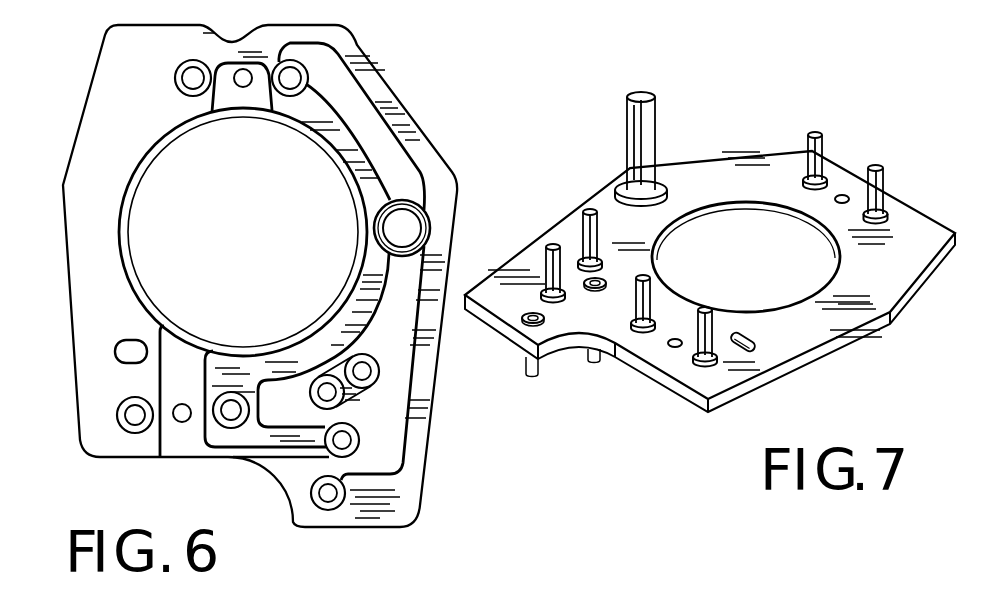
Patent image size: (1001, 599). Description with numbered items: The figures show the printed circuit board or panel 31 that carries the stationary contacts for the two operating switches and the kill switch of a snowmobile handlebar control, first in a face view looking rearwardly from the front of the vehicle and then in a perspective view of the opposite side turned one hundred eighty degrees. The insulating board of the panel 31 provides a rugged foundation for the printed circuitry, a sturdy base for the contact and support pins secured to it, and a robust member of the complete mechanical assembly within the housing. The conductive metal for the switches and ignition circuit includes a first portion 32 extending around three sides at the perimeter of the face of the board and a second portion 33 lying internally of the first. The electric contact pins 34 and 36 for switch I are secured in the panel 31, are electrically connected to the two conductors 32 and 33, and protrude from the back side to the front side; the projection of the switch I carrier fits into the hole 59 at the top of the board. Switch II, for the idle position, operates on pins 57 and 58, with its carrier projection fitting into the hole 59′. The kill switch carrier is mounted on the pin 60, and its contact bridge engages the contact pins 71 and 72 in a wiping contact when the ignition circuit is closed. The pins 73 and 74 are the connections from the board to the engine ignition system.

In FIG. 6, the printed circuit board 31 is at (402, 92).
In FIG. 6, the first conductive portion 32 is at (106, 113).
In FIG. 6, the second conductive portion 33 is at (352, 153).
In FIG. 6, the contact pin 34 is at (190, 77).
In FIG. 7, the contact pin 34 is at (882, 192).
In FIG. 6, the contact pin 36 is at (292, 77).
In FIG. 7, the contact pin 36 is at (818, 152).
In FIG. 6, the contact pin 57 is at (137, 420).
In FIG. 7, the contact pin 57 is at (702, 335).
In FIG. 6, the contact pin 58 is at (228, 413).
In FIG. 7, the contact pin 58 is at (645, 305).
In FIG. 6, the hole 59 is at (243, 86).
In FIG. 7, the hole 59 is at (838, 201).
In FIG. 6, the hole 59′ is at (185, 405).
In FIG. 7, the hole 59′ is at (672, 347).
In FIG. 6, the pin 60 is at (406, 230).
In FIG. 7, the pin 60 is at (640, 135).
In FIG. 6, the contact pin 71 is at (375, 369).
In FIG. 7, the contact pin 71 is at (585, 235).
In FIG. 6, the contact pin 72 is at (355, 437).
In FIG. 7, the contact pin 72 is at (553, 272).
In FIG. 6, the connection pin 73 is at (322, 398).
In FIG. 7, the connection pin 73 is at (593, 292).
In FIG. 6, the connection pin 74 is at (325, 497).
In FIG. 7, the connection pin 74 is at (530, 324).